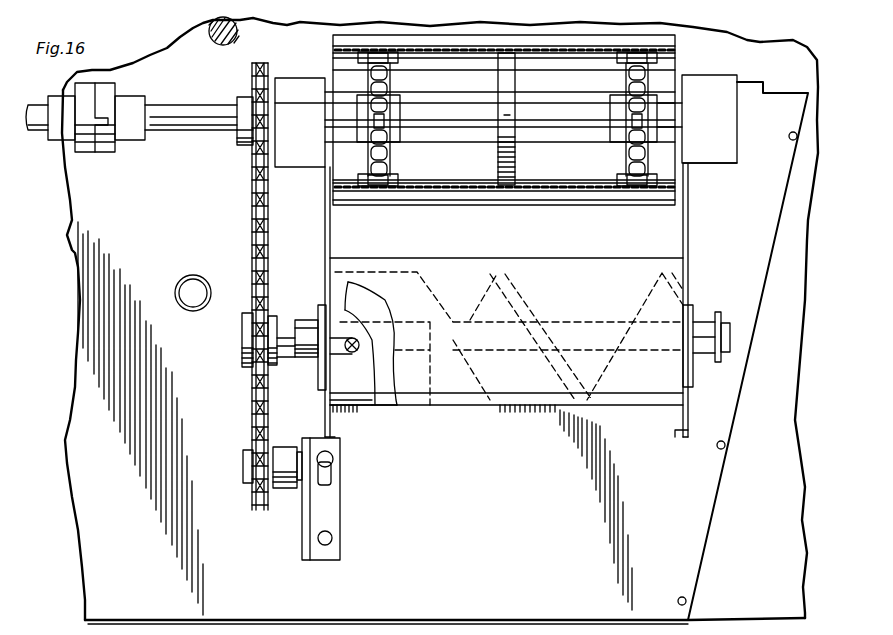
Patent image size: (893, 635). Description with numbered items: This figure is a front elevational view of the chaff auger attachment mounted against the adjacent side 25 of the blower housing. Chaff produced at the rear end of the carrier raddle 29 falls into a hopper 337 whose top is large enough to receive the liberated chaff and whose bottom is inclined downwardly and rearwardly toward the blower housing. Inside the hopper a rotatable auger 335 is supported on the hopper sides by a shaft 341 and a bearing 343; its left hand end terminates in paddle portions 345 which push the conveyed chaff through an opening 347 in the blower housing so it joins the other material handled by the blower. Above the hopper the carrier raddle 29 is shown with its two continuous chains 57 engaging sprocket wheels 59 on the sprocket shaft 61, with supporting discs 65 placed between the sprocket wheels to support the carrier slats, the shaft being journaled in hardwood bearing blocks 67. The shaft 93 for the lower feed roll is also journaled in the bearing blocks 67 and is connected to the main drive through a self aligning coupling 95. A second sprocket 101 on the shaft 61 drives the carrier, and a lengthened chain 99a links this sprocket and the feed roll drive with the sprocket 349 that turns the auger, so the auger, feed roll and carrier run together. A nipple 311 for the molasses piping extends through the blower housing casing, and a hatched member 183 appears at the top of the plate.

The adjacent side of the blower housing 25 is at (93, 380).
The carrier raddle 29 is at (468, 42).
The continuous chains 57 is at (377, 60).
The sprocket wheels 59 is at (383, 81).
The sprocket shaft 61 is at (565, 110).
The supporting discs 65 is at (511, 63).
The bearing blocks 67 is at (305, 90).
The shaft 93 is at (186, 126).
The self aligning coupling 95 is at (104, 148).
The chain 99a is at (256, 223).
The second sprocket 101 is at (253, 86).
The pivot pin 183 is at (212, 41).
The nipple 311 is at (190, 311).
The rotatable auger 335 is at (522, 300).
The hopper 337 is at (688, 239).
The shaft 341 is at (285, 328).
The bearing 343 is at (310, 350).
The paddle portions 345 is at (347, 292).
The opening 347 is at (354, 392).
The sprocket 349 is at (258, 334).